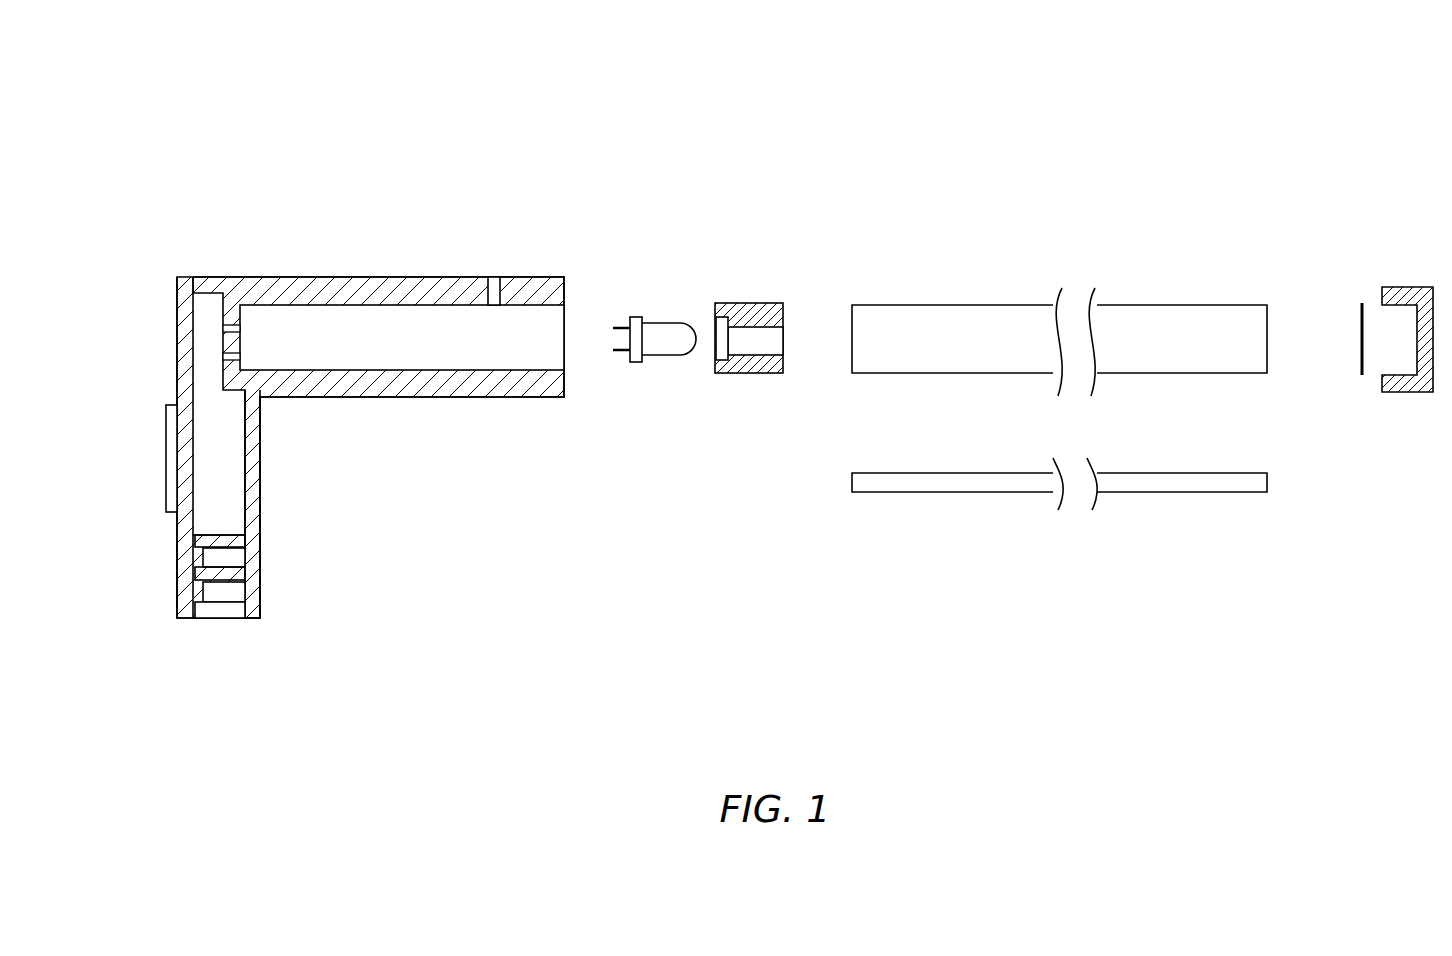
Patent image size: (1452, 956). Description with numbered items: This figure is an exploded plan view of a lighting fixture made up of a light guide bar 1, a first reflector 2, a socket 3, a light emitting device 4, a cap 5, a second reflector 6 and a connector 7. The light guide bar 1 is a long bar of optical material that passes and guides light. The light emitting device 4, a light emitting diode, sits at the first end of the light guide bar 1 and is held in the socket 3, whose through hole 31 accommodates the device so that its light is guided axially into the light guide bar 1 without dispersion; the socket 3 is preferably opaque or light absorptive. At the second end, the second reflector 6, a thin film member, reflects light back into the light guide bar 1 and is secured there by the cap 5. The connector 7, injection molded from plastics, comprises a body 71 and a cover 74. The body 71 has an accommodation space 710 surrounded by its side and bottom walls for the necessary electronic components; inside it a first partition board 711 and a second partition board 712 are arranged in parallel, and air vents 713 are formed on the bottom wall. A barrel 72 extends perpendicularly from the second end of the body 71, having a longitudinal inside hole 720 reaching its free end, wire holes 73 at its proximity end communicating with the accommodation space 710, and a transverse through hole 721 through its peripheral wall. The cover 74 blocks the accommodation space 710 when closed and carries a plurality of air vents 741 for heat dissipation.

The light guide bar 1 is at (942, 332).
The first reflector 2 is at (982, 488).
The socket 3 is at (749, 327).
The through hole 31 is at (748, 343).
The light emitting device 4 is at (658, 332).
The cap 5 is at (1410, 288).
The second reflector 6 is at (1358, 333).
The connector 7 is at (336, 361).
The body 71 is at (241, 486).
The accommodation space 710 is at (213, 477).
The first partition board 711 is at (230, 538).
The second partition board 712 is at (242, 577).
The air vents 713 is at (257, 477).
The barrel 72 is at (378, 294).
The longitudinal inside hole 720 is at (425, 342).
The transverse through hole 721 is at (495, 278).
The wire holes 73 is at (235, 323).
The cover 74 is at (137, 412).
The air vents 741 is at (183, 438).